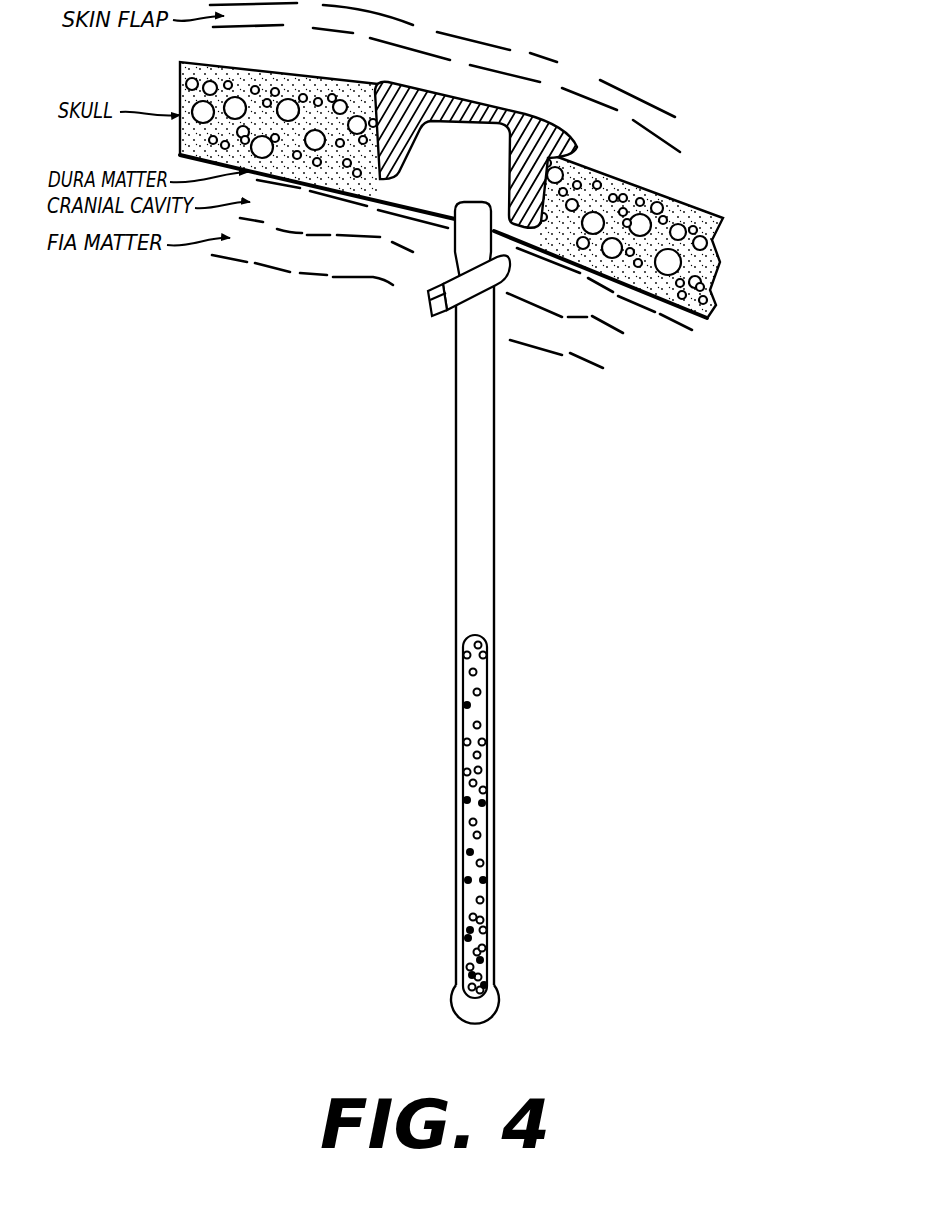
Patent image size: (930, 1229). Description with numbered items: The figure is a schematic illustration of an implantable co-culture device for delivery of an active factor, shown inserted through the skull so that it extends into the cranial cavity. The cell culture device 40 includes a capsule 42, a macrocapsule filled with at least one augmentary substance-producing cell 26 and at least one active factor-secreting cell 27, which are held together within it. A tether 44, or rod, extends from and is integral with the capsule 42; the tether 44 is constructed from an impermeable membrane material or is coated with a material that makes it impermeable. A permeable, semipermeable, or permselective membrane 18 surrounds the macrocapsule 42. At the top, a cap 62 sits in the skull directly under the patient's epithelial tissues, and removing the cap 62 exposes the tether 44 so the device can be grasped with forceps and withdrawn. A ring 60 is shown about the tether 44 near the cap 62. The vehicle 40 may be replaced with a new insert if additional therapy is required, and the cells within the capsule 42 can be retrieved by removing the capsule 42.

The cap 62 is at (531, 112).
The ring clip 60 is at (419, 306).
The cell culture device 40 is at (434, 401).
The tether 44 is at (496, 428).
The capsule 42 is at (457, 816).
The augmentary substance-producing cell 26 is at (486, 742).
The active factor-secreting cell 27 is at (484, 803).
The membrane 18 is at (499, 980).